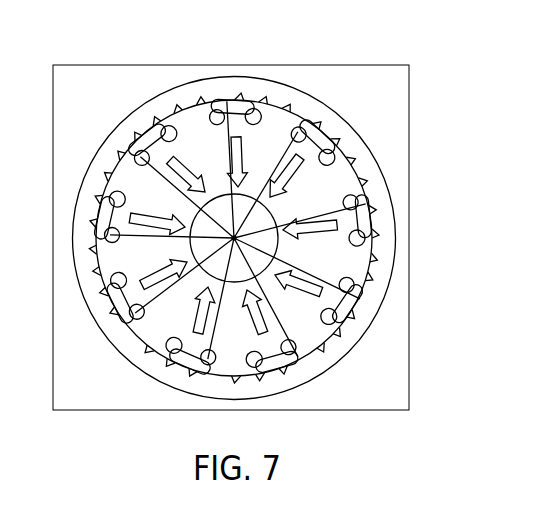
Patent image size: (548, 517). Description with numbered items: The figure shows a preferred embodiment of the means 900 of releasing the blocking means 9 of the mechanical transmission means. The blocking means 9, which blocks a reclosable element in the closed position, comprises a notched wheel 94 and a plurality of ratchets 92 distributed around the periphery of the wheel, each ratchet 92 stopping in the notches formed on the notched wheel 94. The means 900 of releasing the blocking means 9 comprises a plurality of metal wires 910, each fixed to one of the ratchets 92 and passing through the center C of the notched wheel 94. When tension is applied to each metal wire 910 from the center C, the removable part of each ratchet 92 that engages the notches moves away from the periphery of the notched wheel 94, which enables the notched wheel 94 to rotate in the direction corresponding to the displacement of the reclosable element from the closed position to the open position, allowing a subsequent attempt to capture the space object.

The blocking means 9 is at (400, 222).
The notched wheel 94 is at (183, 105).
The ratchet 92 is at (238, 101).
The metal wire 910 is at (254, 203).
The center of the notched wheel C is at (234, 238).
The means of releasing the blocking means 900 is at (272, 248).